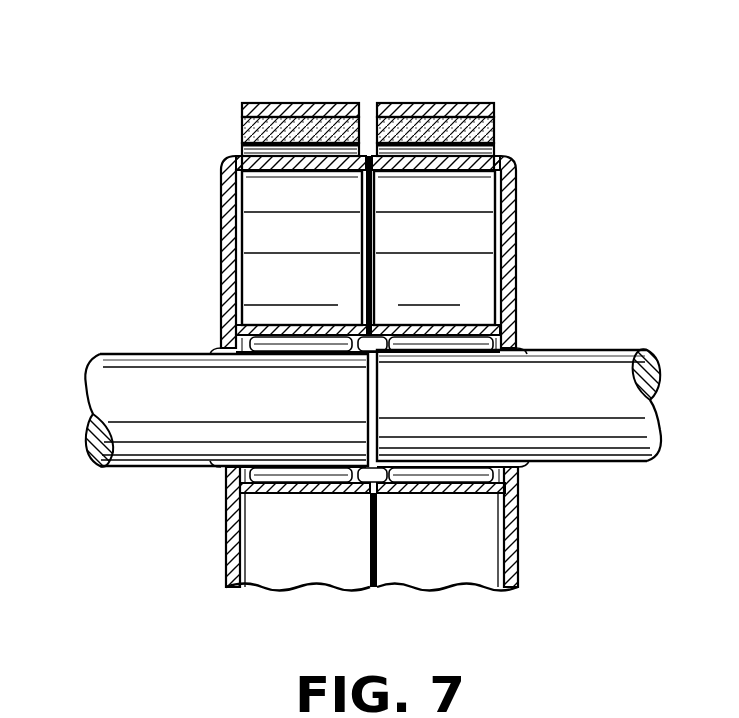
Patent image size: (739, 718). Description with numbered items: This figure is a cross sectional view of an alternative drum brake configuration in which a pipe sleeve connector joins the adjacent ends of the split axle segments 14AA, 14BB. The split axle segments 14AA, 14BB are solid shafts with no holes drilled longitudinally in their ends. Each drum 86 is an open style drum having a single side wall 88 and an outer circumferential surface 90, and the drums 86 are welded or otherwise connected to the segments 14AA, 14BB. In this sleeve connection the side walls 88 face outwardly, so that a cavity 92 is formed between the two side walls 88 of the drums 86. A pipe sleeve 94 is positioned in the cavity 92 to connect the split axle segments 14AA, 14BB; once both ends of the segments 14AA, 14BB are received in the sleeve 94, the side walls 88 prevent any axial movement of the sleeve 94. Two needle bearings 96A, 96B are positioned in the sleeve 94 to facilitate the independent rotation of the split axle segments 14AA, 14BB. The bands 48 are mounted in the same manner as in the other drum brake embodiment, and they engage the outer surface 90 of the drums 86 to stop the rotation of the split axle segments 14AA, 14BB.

The bands 48 is at (398, 102).
The outer circumferential surface 90 is at (490, 149).
The side wall 88 is at (517, 205).
The cavity 92 is at (482, 258).
The pipe sleeve 94 is at (463, 325).
The drum 86 is at (195, 292).
The needle bearing 96A is at (473, 490).
The needle bearing 96B is at (267, 475).
The split axle segment 14AA is at (623, 450).
The split axle segment 14BB is at (123, 462).